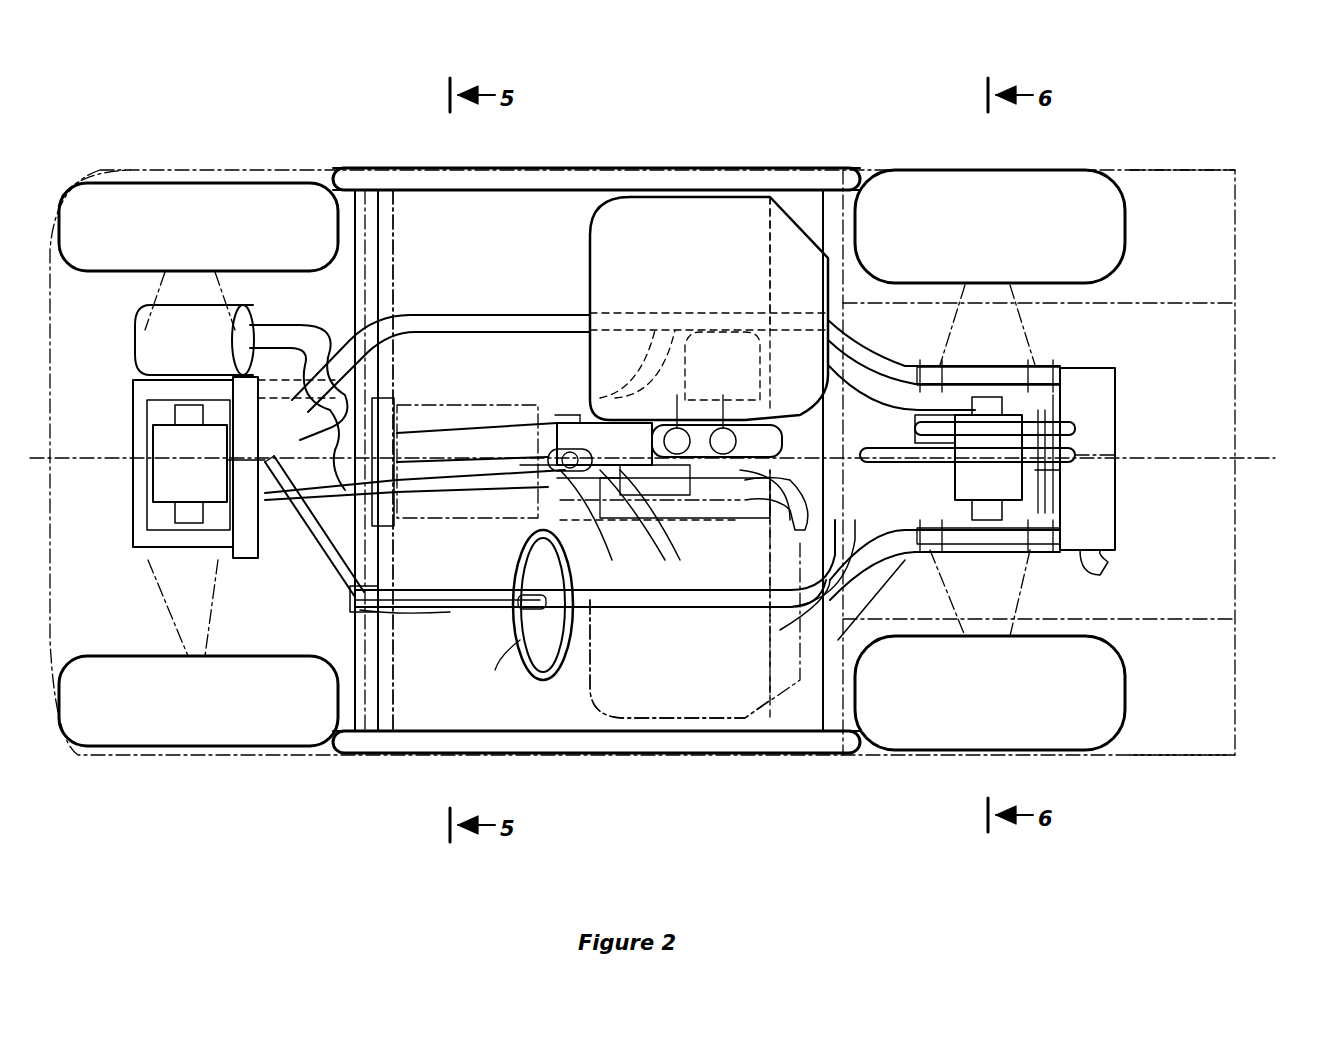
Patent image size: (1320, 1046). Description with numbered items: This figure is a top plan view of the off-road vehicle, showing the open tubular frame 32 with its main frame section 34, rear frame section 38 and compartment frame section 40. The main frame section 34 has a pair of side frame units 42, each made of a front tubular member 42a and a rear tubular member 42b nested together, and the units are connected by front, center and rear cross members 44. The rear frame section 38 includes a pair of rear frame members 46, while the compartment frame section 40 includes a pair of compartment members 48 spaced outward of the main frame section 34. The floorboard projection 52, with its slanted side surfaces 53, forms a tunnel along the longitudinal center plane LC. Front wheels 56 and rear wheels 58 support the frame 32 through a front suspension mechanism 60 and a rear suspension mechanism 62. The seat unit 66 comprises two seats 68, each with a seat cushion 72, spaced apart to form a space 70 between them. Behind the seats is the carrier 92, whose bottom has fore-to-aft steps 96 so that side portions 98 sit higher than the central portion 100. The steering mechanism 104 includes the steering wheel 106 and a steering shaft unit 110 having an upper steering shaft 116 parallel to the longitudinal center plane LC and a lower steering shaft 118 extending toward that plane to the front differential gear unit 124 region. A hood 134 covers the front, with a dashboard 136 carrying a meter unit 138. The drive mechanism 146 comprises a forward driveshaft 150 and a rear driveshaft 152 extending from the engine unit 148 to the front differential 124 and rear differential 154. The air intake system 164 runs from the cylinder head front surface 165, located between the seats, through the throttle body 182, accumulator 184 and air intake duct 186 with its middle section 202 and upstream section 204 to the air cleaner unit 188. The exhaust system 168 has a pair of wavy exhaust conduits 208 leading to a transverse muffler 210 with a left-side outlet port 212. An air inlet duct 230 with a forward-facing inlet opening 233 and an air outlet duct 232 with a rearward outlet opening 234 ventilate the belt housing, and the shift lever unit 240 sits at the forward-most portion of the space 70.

The frame 32 is at (778, 150).
The main frame section 34 is at (128, 560).
The rear frame section 38 is at (875, 582).
The compartment frame section 40 is at (490, 160).
The side frame unit 42 is at (473, 305).
The front tubular member 42a is at (258, 425).
The rear tubular member 42b is at (558, 313).
The cross member 44 is at (133, 438).
The rear frame member 46 is at (897, 366).
The compartment member 48 is at (660, 168).
The projection 52 is at (490, 405).
The slanted side surface 53 is at (420, 505).
The front wheel 56 is at (270, 183).
The rear wheel 58 is at (1127, 228).
The front suspension mechanism 60 is at (165, 288).
The rear suspension mechanism 62 is at (1045, 327).
The seat unit 66 is at (585, 225).
The seat 68 is at (620, 196).
The space 70 is at (651, 471).
The seat cushion 72 is at (700, 197).
The carrier 92 is at (1178, 160).
The step 96 is at (1228, 305).
The side portion 98 is at (1205, 180).
The central portion 100 is at (1225, 575).
The steering mechanism 104 is at (449, 620).
The steering wheel 106 is at (512, 652).
The steering shaft unit 110 is at (296, 554).
The upper steering shaft 116 is at (365, 608).
The lower steering shaft 118 is at (300, 580).
The front differential gear unit 124 is at (178, 462).
The hood 134 is at (160, 176).
The dashboard 136 is at (397, 245).
The meter unit 138 is at (385, 400).
The drive mechanism 146 is at (512, 520).
The engine unit 148 is at (840, 380).
The forward driveshaft 150 is at (493, 503).
The rear driveshaft 152 is at (882, 455).
The rear differential 154 is at (1005, 490).
The air intake system 164 is at (552, 418).
The front surface 165 is at (740, 470).
The exhaust system 168 is at (1047, 456).
The throttle body 182 is at (678, 418).
The accumulator 184 is at (598, 400).
The air intake duct 186 is at (312, 325).
The air cleaner unit 188 is at (140, 314).
The middle section 202 is at (460, 430).
The upstream section 204 is at (325, 345).
The exhaust conduit 208 is at (1117, 440).
The muffler 210 is at (1115, 388).
The outlet port 212 is at (1108, 565).
The air inlet duct 230 is at (878, 562).
The air outlet duct 232 is at (628, 470).
The inlet opening 233 is at (866, 606).
The outlet opening 234 is at (760, 568).
The shift lever unit 240 is at (615, 570).
The longitudinal center plane LC is at (1250, 457).